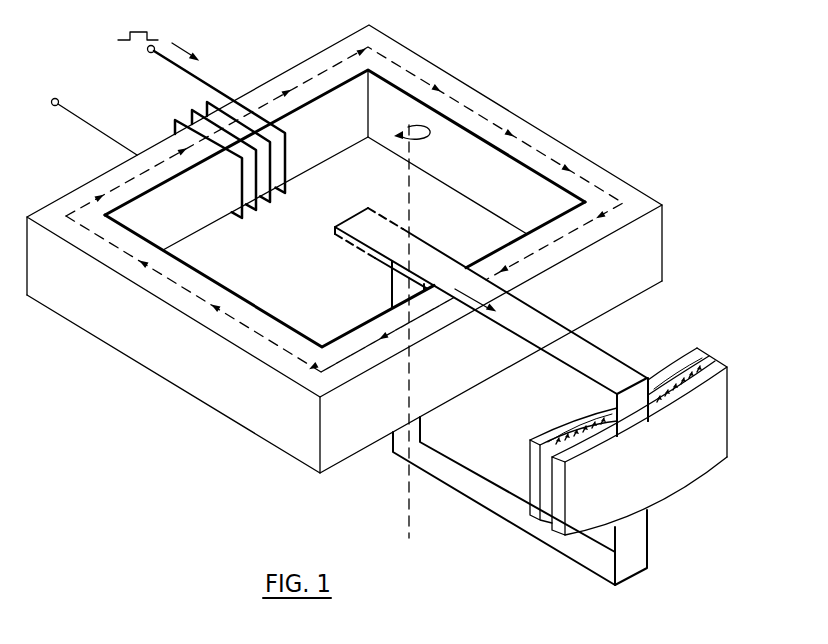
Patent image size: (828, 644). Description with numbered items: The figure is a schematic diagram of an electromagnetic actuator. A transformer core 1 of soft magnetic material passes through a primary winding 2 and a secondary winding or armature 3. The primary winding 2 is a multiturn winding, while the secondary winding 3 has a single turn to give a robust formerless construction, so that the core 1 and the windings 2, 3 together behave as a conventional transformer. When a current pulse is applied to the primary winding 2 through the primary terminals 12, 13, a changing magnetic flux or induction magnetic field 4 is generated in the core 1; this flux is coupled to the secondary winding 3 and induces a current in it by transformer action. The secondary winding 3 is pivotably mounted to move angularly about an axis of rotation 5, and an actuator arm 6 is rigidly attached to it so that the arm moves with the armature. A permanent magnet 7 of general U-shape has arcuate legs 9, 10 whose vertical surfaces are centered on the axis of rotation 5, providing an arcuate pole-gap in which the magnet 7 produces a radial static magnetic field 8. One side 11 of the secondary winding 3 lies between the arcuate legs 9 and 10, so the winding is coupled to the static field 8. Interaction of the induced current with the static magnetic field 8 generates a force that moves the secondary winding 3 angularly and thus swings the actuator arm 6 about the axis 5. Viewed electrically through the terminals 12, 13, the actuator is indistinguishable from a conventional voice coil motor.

The transformer core 1 is at (590, 159).
The primary winding 2 is at (246, 74).
The secondary winding 3 is at (545, 315).
The induction magnetic field 4 is at (463, 98).
The axis of rotation 5 is at (408, 173).
The actuator arm 6 is at (375, 257).
The permanent magnet 7 is at (716, 356).
The radial static magnetic field 8 is at (680, 398).
The arcuate leg 9 is at (680, 374).
The arcuate leg 10 is at (673, 498).
The side of secondary winding 11 is at (630, 424).
The primary terminal 12 is at (149, 54).
The primary terminal 13 is at (59, 103).